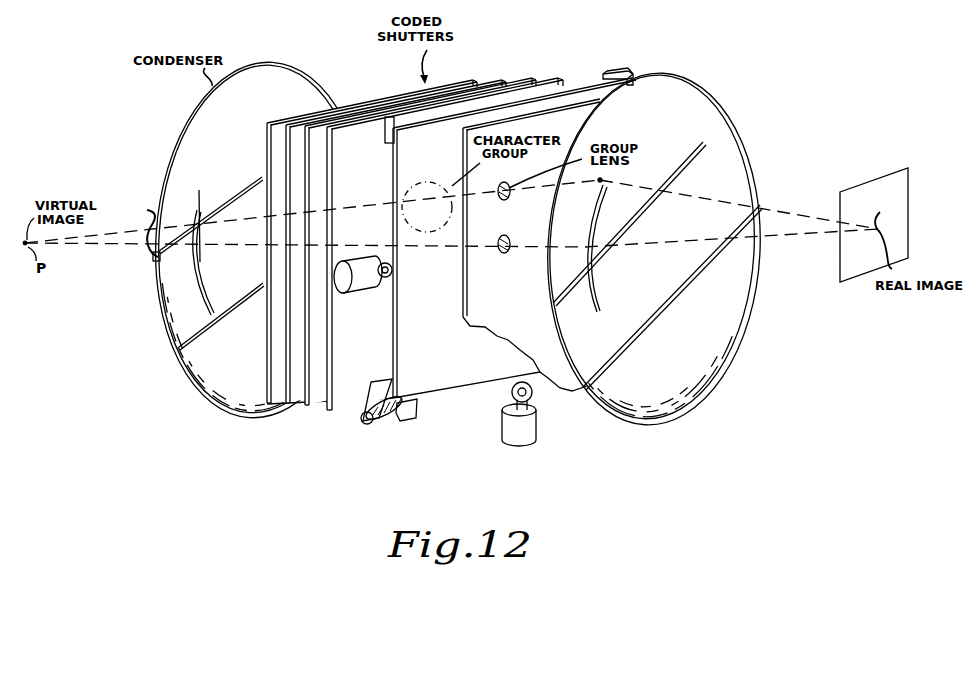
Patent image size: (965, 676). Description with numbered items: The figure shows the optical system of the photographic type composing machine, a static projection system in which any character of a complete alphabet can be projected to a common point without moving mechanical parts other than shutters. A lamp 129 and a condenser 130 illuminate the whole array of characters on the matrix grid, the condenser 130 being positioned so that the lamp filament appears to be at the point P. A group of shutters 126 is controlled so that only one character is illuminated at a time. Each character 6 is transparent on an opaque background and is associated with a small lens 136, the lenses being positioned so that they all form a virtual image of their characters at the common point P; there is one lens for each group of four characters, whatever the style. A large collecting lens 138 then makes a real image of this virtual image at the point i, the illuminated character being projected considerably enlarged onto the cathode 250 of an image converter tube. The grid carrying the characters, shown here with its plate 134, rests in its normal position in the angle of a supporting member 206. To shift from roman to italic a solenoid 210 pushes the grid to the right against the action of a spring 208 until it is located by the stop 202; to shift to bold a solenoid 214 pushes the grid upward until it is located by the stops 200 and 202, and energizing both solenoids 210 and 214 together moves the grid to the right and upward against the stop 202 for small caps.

The condenser 130 is at (291, 66).
The lamp 129 is at (141, 225).
The shutters 126 is at (548, 65).
The stop 200 is at (388, 133).
The stop 202 is at (621, 70).
The collecting lens 138 is at (678, 123).
The small lens 136 is at (507, 196).
The character plate 134 is at (503, 338).
The character 6 is at (433, 166).
The solenoid 210 is at (359, 290).
The spring 208 is at (364, 424).
The supporting member 206 is at (399, 422).
The solenoid 214 is at (538, 437).
The cathode 250 is at (871, 183).